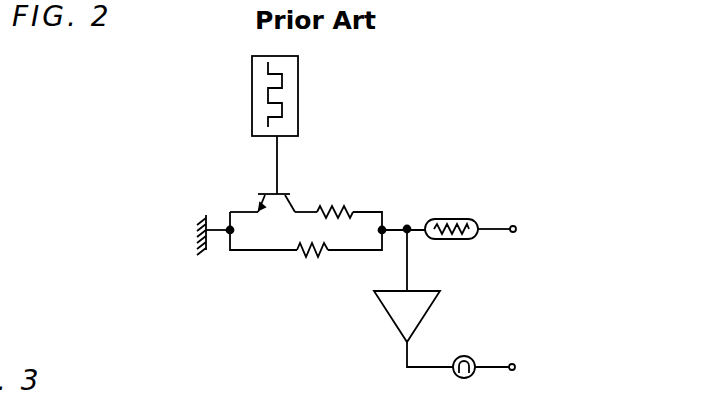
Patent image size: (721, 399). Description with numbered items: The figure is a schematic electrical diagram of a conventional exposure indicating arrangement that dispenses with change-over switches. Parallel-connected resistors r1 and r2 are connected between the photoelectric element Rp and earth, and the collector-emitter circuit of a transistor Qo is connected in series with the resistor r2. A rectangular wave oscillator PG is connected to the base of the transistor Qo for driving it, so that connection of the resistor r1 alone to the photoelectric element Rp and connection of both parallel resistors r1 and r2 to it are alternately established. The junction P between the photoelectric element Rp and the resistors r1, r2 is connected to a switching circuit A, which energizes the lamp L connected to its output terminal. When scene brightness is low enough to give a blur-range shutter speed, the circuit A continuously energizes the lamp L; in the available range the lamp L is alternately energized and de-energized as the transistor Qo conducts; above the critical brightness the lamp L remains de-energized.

The rectangular wave oscillator PG is at (287, 89).
The transistor Qo is at (282, 193).
The resistor r1 is at (303, 257).
The resistor r2 is at (344, 204).
The junction P is at (407, 225).
The photoelectric element Rp is at (458, 218).
The switching circuit A is at (413, 329).
The indicating lamp L is at (465, 357).